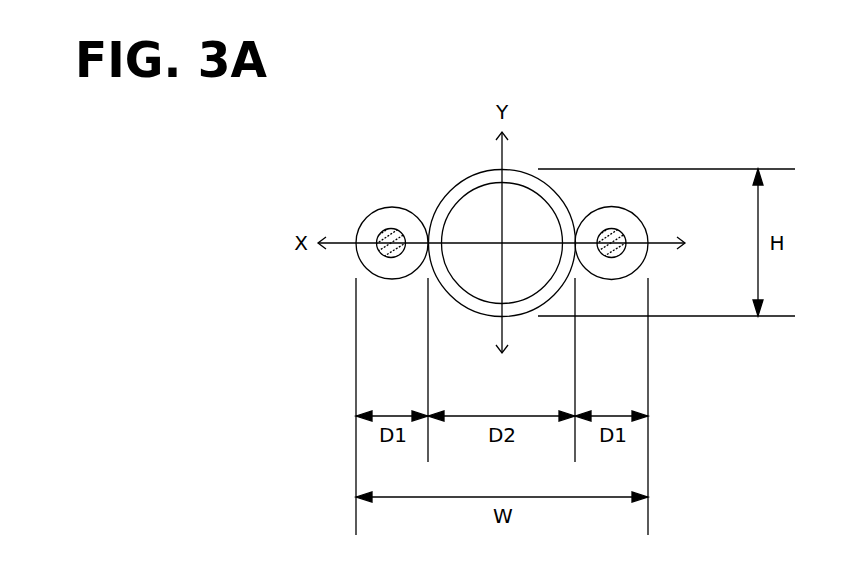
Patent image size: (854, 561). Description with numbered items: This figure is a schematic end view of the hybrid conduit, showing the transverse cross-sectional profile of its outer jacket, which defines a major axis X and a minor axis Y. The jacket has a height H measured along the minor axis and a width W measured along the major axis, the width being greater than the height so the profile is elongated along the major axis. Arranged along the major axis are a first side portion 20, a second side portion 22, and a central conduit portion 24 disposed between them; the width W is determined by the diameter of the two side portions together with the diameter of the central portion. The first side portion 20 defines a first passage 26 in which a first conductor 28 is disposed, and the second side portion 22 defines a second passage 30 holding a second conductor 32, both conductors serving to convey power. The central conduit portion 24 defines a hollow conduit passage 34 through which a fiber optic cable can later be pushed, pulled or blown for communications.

The first side portion 20 is at (380, 208).
The second side portion 22 is at (638, 220).
The central conduit portion 24 is at (462, 180).
The first passage 26 is at (378, 237).
The first conductor 28 is at (378, 249).
The second passage 30 is at (624, 233).
The second conductor 32 is at (625, 247).
The hollow conduit passage 34 is at (462, 225).